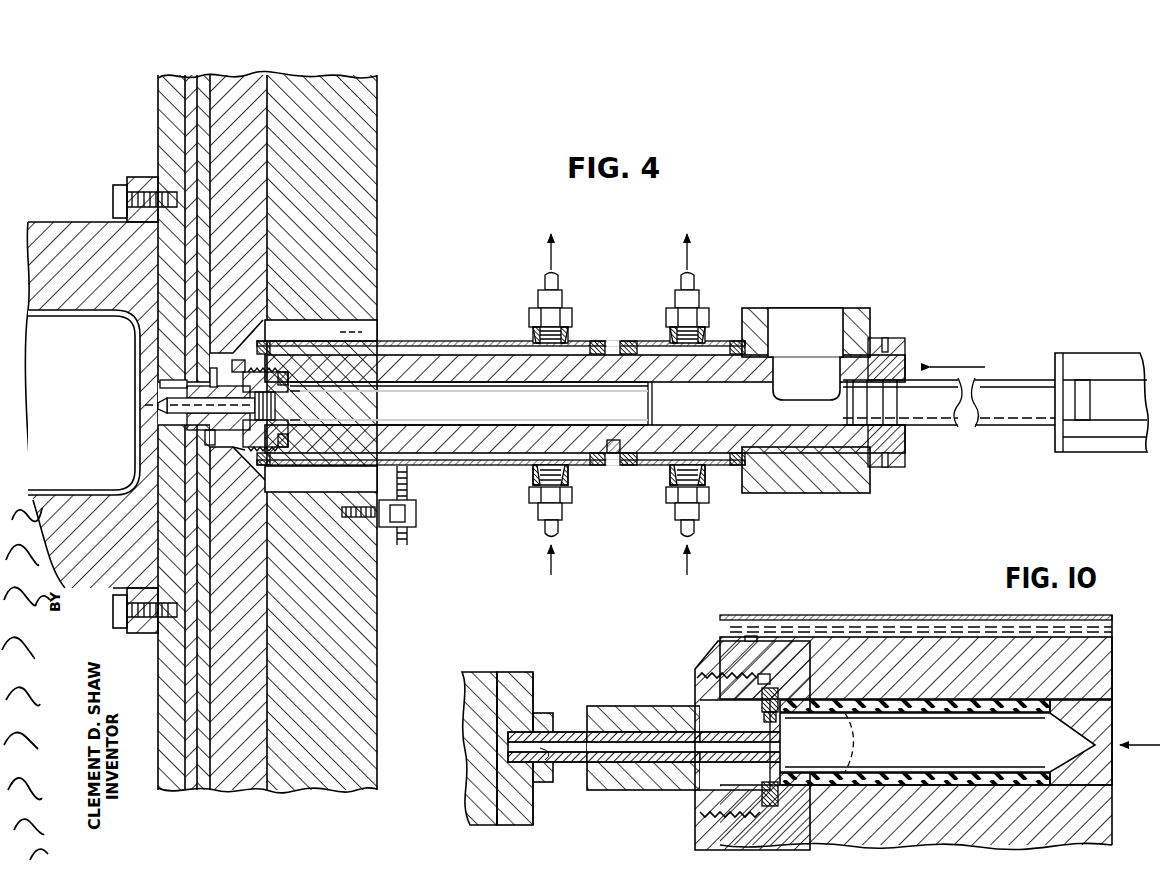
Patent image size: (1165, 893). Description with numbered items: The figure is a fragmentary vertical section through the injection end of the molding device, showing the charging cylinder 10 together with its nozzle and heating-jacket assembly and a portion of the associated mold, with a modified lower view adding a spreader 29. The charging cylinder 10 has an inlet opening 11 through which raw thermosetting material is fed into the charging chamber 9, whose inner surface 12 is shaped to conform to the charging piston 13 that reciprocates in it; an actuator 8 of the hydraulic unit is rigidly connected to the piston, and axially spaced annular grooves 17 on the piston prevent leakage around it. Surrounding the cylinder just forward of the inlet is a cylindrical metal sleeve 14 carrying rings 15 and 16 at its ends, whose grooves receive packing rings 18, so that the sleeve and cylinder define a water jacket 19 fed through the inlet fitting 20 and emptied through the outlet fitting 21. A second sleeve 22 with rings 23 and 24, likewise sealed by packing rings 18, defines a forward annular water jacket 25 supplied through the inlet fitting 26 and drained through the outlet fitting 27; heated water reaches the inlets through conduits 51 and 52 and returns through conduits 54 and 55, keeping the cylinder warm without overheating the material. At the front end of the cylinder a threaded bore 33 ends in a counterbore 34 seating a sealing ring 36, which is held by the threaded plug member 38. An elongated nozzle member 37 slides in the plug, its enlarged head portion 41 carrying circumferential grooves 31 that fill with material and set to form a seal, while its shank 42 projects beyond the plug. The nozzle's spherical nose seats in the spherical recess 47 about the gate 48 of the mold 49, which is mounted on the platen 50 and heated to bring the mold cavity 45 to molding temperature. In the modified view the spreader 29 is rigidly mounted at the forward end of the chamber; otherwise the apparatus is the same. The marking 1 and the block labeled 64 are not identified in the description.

In FIG. 4, the apparatus 1 is at (37, 218).
In FIG. 4, the actuator 8 is at (1078, 355).
In FIG. 4, the charging chamber 9 is at (522, 408).
In FIG. 4, the charging cylinder 10 is at (440, 355).
In FIG. 4, the inlet opening 11 is at (808, 318).
In FIG. 4, the inner surface 12 is at (450, 432).
In FIG. 4, the charging piston 13 is at (985, 428).
In FIG. 4, the cylindrical metal sleeve 14 is at (636, 341).
In FIG. 4, the metal ring 15 is at (626, 341).
In FIG. 4, the metal ring 16 is at (740, 341).
In FIG. 4, the annular grooves 17 is at (880, 410).
In FIG. 4, the packing rings 18 is at (290, 380).
In FIG. 4, the water jacket 19 is at (653, 466).
In FIG. 4, the inlet fitting 20 is at (700, 510).
In FIG. 4, the outlet fitting 21 is at (698, 290).
In FIG. 4, the second cylindrical metal sleeve 22 is at (385, 341).
In FIG. 10, the second cylindrical metal sleeve 22 is at (935, 615).
In FIG. 4, the ring 23 is at (597, 341).
In FIG. 4, the ring 24 is at (292, 345).
In FIG. 4, the annular water jacket 25 is at (498, 341).
In FIG. 4, the inlet fitting 26 is at (540, 520).
In FIG. 4, the outlet fitting 27 is at (540, 292).
In FIG. 10, the spreader 29 is at (1002, 755).
In FIG. 10, the circumferential grooves 31 is at (852, 748).
In FIG. 4, the threaded bore 33 is at (245, 372).
In FIG. 10, the threaded bore 33 is at (712, 690).
In FIG. 10, the cylindrical counterbore 34 is at (775, 688).
In FIG. 4, the sealing ring 36 is at (290, 418).
In FIG. 10, the sealing ring 36 is at (758, 795).
In FIG. 4, the nozzle member 37 is at (205, 418).
In FIG. 4, the plug member 38 is at (243, 438).
In FIG. 10, the plug member 38 is at (695, 790).
In FIG. 4, the head portion 41 is at (278, 402).
In FIG. 4, the shank 42 is at (165, 380).
In FIG. 4, the mold cavity 45 is at (95, 497).
In FIG. 10, the spherical recess 47 is at (558, 732).
In FIG. 4, the gate 48 is at (162, 410).
In FIG. 10, the gate 48 is at (540, 765).
In FIG. 4, the mold 49 is at (88, 222).
In FIG. 10, the mold 49 is at (533, 700).
In FIG. 4, the platen 50 is at (158, 137).
In FIG. 4, the conduit 51 is at (560, 530).
In FIG. 4, the conduit 52 is at (695, 530).
In FIG. 4, the conduit 54 is at (555, 280).
In FIG. 4, the conduit 55 is at (682, 275).
In FIG. 4, the block 64 is at (377, 118).